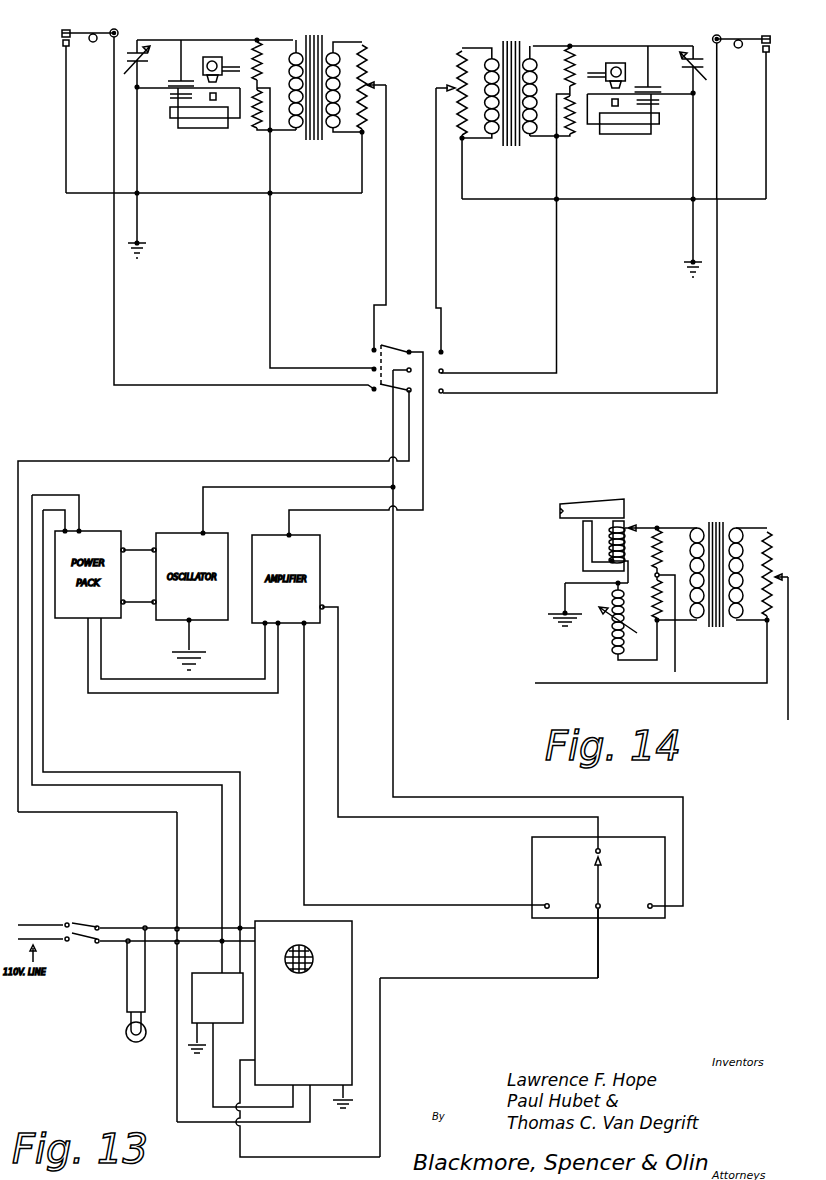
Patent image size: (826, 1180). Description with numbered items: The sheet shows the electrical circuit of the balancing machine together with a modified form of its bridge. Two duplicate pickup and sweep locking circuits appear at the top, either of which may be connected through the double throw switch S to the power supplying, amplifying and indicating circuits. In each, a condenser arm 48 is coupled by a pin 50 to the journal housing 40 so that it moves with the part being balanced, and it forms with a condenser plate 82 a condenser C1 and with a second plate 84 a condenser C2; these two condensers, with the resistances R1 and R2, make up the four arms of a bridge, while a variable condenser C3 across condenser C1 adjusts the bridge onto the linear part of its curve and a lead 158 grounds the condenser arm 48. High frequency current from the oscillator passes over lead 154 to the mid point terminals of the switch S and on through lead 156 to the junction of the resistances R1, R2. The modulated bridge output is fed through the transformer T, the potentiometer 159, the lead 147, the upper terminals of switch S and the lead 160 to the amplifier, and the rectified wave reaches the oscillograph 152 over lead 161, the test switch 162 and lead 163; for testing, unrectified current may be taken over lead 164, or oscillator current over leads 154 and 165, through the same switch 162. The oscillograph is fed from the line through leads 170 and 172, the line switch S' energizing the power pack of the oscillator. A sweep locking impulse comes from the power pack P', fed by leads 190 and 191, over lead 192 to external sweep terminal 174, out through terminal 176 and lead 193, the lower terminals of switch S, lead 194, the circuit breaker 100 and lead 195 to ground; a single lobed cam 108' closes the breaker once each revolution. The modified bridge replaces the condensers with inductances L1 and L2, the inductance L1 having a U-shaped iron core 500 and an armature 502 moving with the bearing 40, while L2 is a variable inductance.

In FIG. 13, the circuit breaker 100 is at (90, 31).
In FIG. 13, the single lobed cam 108' is at (416, 63).
In FIG. 13, the variable condenser C3 is at (137, 40).
In FIG. 13, the journal housing 40 is at (213, 57).
In FIG. 13, the pin 50 is at (238, 71).
In FIG. 13, the condenser C1 is at (183, 80).
In FIG. 13, the condenser plate 82 is at (172, 87).
In FIG. 13, the condenser C2 is at (187, 100).
In FIG. 13, the condenser plate 84 is at (174, 98).
In FIG. 13, the condenser arm 48 is at (221, 95).
In FIG. 13, the resistance R1 is at (571, 84).
In FIG. 14, the resistance R1 is at (659, 557).
In FIG. 13, the resistance R2 is at (261, 115).
In FIG. 14, the resistance R2 is at (655, 583).
In FIG. 13, the transformer T is at (315, 35).
In FIG. 14, the transformer T is at (725, 523).
In FIG. 13, the potentiometer 159 is at (367, 71).
In FIG. 14, the potentiometer 159 is at (770, 547).
In FIG. 13, the lead 158 is at (138, 178).
In FIG. 14, the lead 158 is at (563, 591).
In FIG. 13, the lead 147 is at (436, 148).
In FIG. 14, the lead 147 is at (787, 703).
In FIG. 13, the lead 194 is at (114, 327).
In FIG. 13, the lead 156 is at (292, 366).
In FIG. 14, the lead 156 is at (676, 648).
In FIG. 13, the lead 195 is at (66, 154).
In FIG. 13, the double throw switch S is at (418, 356).
In FIG. 13, the lead 160 is at (428, 363).
In FIG. 13, the lead 154 is at (343, 461).
In FIG. 13, the lead 165 is at (683, 852).
In FIG. 13, the test switch 162 is at (632, 918).
In FIG. 13, the lead 161 is at (445, 817).
In FIG. 13, the lead 164 is at (304, 740).
In FIG. 13, the lead 163 is at (380, 1065).
In FIG. 13, the lead 193 is at (177, 863).
In FIG. 13, the external sweep terminal 176 is at (311, 1088).
In FIG. 13, the switch S' is at (82, 918).
In FIG. 13, the lead 170 is at (184, 927).
In FIG. 13, the lead 172 is at (181, 944).
In FIG. 13, the lead 191 is at (194, 972).
In FIG. 13, the lead 190 is at (244, 959).
In FIG. 13, the power pack P' is at (215, 1015).
In FIG. 13, the lead 192 is at (213, 1083).
In FIG. 13, the external sweep terminal 174 is at (290, 1090).
In FIG. 13, the oscillograph 152 is at (343, 968).
In FIG. 14, the armature 502 is at (600, 495).
In FIG. 14, the U-shaped iron core 500 is at (583, 548).
In FIG. 14, the inductance L1 is at (627, 531).
In FIG. 14, the variable inductance L2 is at (615, 625).